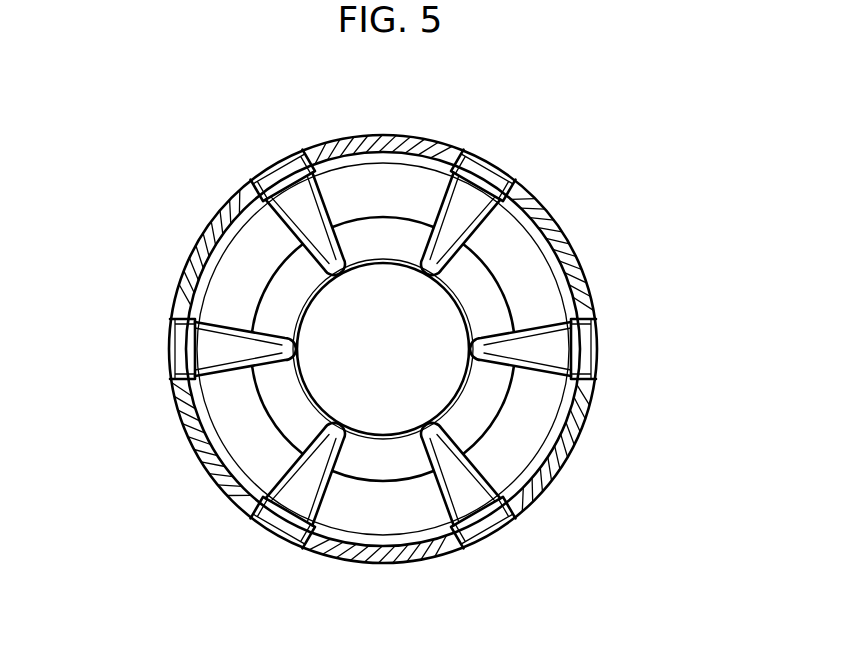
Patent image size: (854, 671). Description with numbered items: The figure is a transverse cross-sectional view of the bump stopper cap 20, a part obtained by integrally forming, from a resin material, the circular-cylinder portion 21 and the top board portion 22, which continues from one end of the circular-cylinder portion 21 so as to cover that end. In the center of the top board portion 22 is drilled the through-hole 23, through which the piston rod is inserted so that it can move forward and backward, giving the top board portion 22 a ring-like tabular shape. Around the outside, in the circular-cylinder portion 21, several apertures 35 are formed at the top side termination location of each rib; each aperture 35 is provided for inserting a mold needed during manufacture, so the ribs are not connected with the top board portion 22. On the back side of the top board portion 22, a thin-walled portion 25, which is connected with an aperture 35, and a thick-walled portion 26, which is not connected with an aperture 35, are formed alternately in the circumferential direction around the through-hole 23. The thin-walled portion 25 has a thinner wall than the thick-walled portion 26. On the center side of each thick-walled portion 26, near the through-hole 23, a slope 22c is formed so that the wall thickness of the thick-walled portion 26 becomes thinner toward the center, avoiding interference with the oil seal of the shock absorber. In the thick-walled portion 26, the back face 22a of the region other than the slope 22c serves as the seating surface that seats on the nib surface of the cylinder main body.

The bump stopper cap 20 is at (667, 198).
The circular-cylinder portion 21 is at (583, 427).
The top board portion 22 is at (392, 355).
The back face 22a is at (375, 178).
The slope 22c is at (352, 225).
The through-hole 23 is at (455, 312).
The thin-walled portion 25 is at (290, 190).
The thick-walled portion 26 is at (415, 188).
The aperture 35 is at (272, 168).